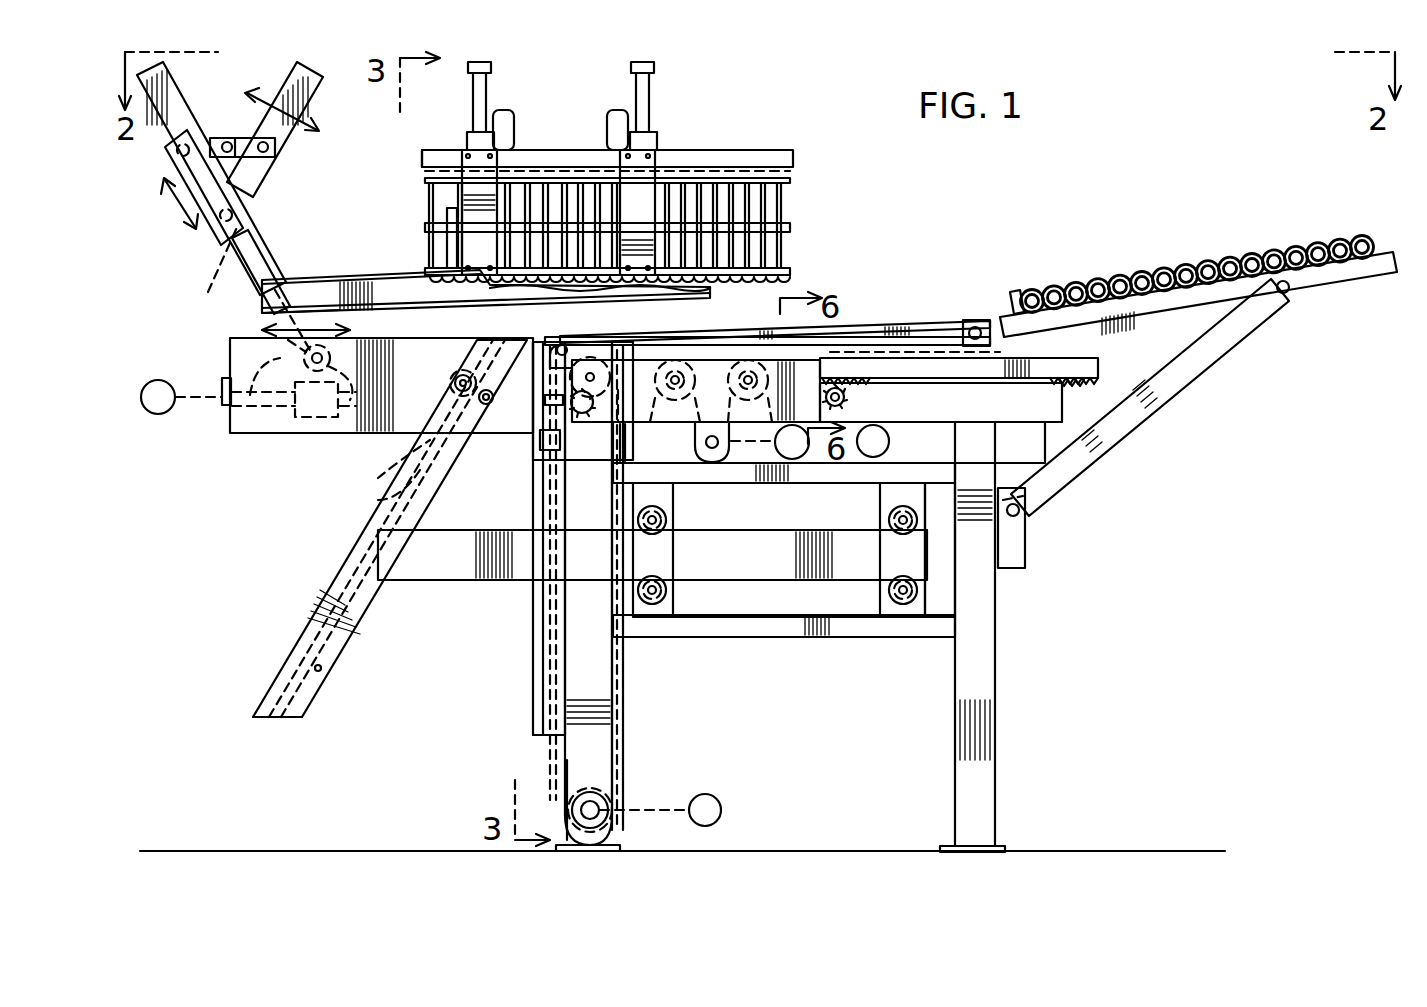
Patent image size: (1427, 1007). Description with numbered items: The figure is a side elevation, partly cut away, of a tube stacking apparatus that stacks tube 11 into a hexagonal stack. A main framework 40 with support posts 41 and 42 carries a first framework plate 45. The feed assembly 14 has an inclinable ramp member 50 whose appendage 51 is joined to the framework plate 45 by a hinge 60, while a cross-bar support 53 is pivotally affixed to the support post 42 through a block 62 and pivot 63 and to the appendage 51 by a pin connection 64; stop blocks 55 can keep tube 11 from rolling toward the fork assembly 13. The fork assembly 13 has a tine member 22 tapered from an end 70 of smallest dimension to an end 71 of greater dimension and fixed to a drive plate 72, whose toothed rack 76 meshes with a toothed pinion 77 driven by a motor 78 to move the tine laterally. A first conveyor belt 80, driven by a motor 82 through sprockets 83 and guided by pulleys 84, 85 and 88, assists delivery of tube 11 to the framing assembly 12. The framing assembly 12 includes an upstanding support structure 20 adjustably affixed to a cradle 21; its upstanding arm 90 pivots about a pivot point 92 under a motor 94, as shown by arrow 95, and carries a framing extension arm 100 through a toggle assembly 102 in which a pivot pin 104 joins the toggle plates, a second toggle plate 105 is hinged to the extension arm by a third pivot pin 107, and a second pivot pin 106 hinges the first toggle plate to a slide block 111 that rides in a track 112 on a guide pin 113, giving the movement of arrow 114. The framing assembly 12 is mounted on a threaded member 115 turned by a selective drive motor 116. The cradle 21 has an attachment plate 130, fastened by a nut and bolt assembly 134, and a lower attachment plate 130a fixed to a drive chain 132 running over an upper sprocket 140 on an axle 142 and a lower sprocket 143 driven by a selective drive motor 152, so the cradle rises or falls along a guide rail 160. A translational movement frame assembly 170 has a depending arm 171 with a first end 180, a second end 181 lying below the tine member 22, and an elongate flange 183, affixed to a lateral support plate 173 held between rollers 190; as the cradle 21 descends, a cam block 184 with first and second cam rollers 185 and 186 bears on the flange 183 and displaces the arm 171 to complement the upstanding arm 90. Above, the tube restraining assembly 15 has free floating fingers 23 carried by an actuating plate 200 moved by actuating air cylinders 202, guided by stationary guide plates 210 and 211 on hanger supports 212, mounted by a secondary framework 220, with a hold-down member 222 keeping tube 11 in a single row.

The tube 11 is at (1100, 282).
The framing assembly 12 is at (155, 252).
The fork assembly 13 is at (925, 300).
The tube feed assembly 14 is at (1230, 372).
The tube restraining assembly 15 is at (832, 196).
The upstanding support structure 20 is at (202, 108).
The cradle 21 is at (230, 433).
The tine member 22 is at (765, 332).
The free floating fingers 23 is at (795, 228).
The main framework 40 is at (1020, 726).
The support post 41 is at (567, 756).
The support post 42 is at (985, 622).
The first framework plate 45 is at (1010, 403).
The inclinable ramp member 50 is at (1363, 294).
The appendage 51 is at (1322, 278).
The cross-bar support 53 is at (1147, 398).
The stop blocks 55 is at (1012, 290).
The hinge 60 is at (972, 322).
The block 62 is at (1025, 548).
The pivot 63 is at (1025, 512).
The pin connection 64 is at (1282, 296).
The end of smallest dimension 70 is at (548, 358).
The end of greater dimension 71 is at (880, 336).
The drive plate 72 is at (1080, 368).
The toothed rack 76 is at (1098, 385).
The toothed pinion 77 is at (850, 398).
The motor 78 is at (889, 441).
The first conveyor belt 80 is at (612, 352).
The motor 82 is at (805, 458).
The sprockets 83 is at (750, 530).
The pulley 84 is at (710, 335).
The pulley 85 is at (745, 432).
The pulley 88 is at (466, 376).
The upstanding arm 90 is at (355, 268).
The pivot point 92 is at (340, 418).
The motor 94 is at (300, 410).
The arrow 95 is at (278, 240).
The framing extension arm 100 is at (285, 105).
The toggle assembly 102 is at (222, 128).
The pivot pin 104 is at (245, 183).
The second toggle plate 105 is at (287, 142).
The third pivot pin 107 is at (272, 150).
The second pivot pin 106 is at (159, 203).
The slide block 111 is at (215, 243).
The track 112 is at (282, 272).
The guide pin 113 is at (208, 274).
The arrow 114 is at (205, 236).
The threaded member 115 is at (300, 352).
The selective drive motor 116 is at (165, 415).
The attachment plate 130 is at (545, 440).
The lower attachment plate 130a is at (528, 580).
The drive chain 132 is at (625, 722).
The nut and bolt assembly 134 is at (560, 470).
The upper sprocket 140 is at (829, 442).
The axle 142 is at (665, 338).
The lower sprocket 143 is at (608, 800).
The selective drive motor 152 is at (721, 810).
The guide rail 160 is at (568, 405).
The translational movement frame assembly 170 is at (330, 572).
The depending arm 171 is at (312, 638).
The lateral support plate 173 is at (438, 566).
The first end 180 is at (268, 712).
The second end 181 is at (475, 330).
The elongate flange 183 is at (322, 669).
The cam block 184 is at (393, 433).
The first cam roller 185 is at (375, 478).
The second cam roller 186 is at (378, 500).
The rollers 190 is at (666, 510).
The actuating plate 200 is at (793, 165).
The actuating air cylinder 202 is at (490, 88).
The stationary guide plate 210 is at (428, 236).
The stationary guide plate 211 is at (795, 270).
The hanger supports 212 is at (497, 182).
The secondary framework 220 is at (504, 114).
The hold-down member 222 is at (392, 286).